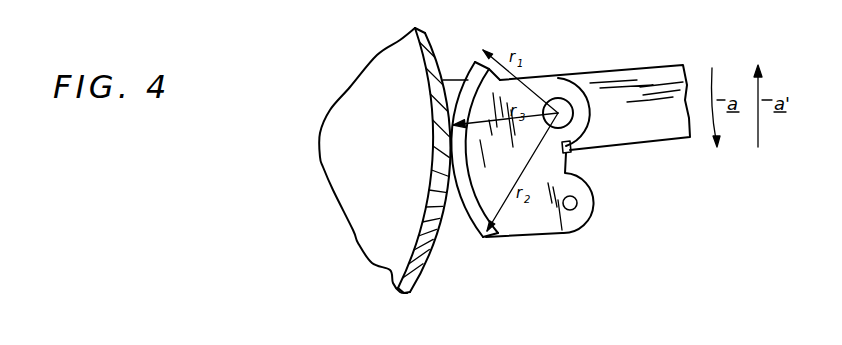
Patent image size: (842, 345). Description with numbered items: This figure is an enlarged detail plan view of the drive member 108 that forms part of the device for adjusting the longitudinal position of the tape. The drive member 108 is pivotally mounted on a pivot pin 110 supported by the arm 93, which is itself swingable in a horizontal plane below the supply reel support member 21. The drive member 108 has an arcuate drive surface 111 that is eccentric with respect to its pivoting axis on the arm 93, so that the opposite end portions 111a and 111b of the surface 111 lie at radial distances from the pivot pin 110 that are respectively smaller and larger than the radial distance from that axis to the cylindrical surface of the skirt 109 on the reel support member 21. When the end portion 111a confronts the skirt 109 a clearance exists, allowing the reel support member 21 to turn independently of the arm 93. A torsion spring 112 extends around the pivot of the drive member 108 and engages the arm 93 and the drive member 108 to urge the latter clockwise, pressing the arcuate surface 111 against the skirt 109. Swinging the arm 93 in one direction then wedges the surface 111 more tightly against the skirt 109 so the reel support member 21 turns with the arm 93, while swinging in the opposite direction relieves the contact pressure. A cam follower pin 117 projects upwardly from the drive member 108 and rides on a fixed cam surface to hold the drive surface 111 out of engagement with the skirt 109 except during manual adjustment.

The supply reel support member 21 is at (354, 240).
The arm 93 is at (673, 72).
The drive member 108 is at (544, 218).
The skirt 109 is at (419, 261).
The pivot pin 110 is at (549, 101).
The arcuate drive surface 111 is at (492, 142).
The end portion of arcuate drive surface 111a is at (473, 62).
The end portion of arcuate drive surface 111b is at (483, 240).
The torsion spring 112 is at (571, 151).
The cam follower pin 117 is at (577, 203).